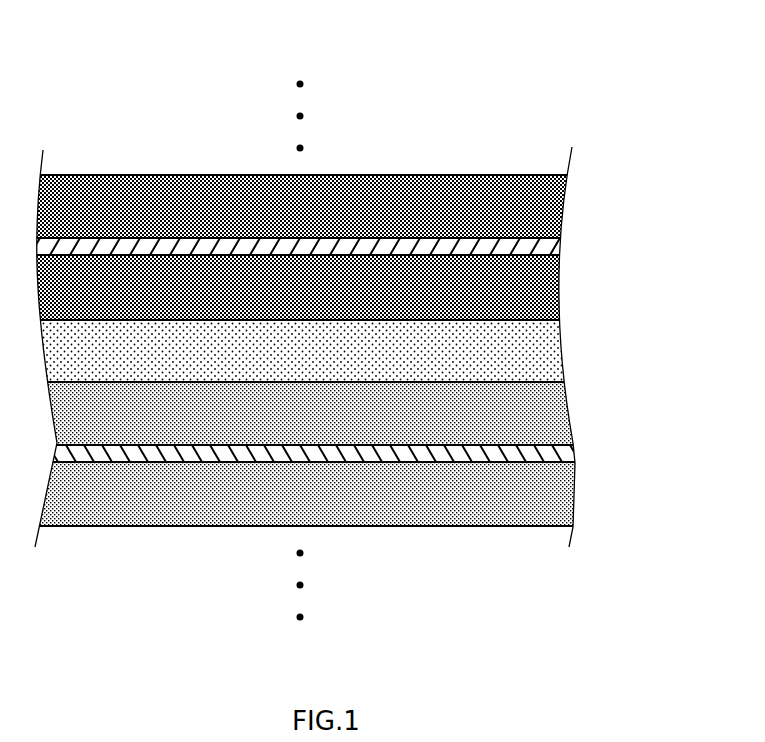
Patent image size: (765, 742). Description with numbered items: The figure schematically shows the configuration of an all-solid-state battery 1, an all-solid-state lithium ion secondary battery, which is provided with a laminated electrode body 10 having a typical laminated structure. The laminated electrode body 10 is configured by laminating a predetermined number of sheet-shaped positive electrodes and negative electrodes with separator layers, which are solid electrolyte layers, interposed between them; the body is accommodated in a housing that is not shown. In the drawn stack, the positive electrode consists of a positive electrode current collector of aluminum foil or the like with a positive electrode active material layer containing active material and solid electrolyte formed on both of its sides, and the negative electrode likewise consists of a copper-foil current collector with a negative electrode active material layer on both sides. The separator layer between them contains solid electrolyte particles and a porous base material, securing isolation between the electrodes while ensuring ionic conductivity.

The all-solid-state battery 1 is at (467, 35).
The laminated electrode body 10 is at (496, 174).